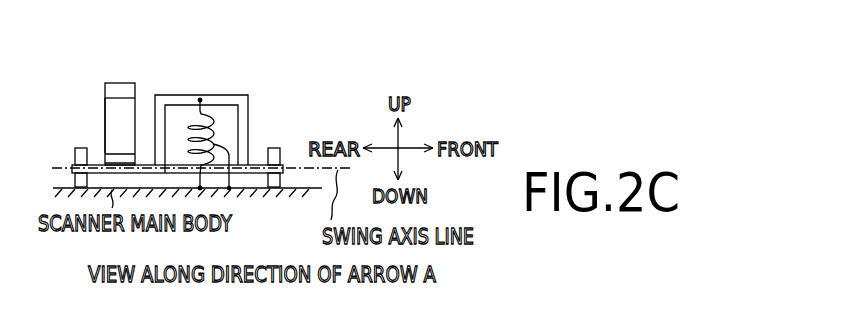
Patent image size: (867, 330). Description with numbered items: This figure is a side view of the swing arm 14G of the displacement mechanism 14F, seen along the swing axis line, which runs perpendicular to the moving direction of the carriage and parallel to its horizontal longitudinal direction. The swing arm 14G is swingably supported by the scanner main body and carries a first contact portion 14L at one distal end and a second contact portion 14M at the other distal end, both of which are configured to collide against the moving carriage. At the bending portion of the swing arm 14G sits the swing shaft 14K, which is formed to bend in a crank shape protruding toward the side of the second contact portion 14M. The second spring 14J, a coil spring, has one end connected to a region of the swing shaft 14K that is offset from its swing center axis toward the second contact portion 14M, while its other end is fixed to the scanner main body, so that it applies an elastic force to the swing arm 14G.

The displacement mechanism 14F is at (108, 70).
The second contact portion 14M is at (120, 82).
The swing arm 14G is at (103, 110).
The first contact portion 14L is at (120, 154).
The swing shaft 14K is at (257, 162).
The second spring 14J is at (231, 191).